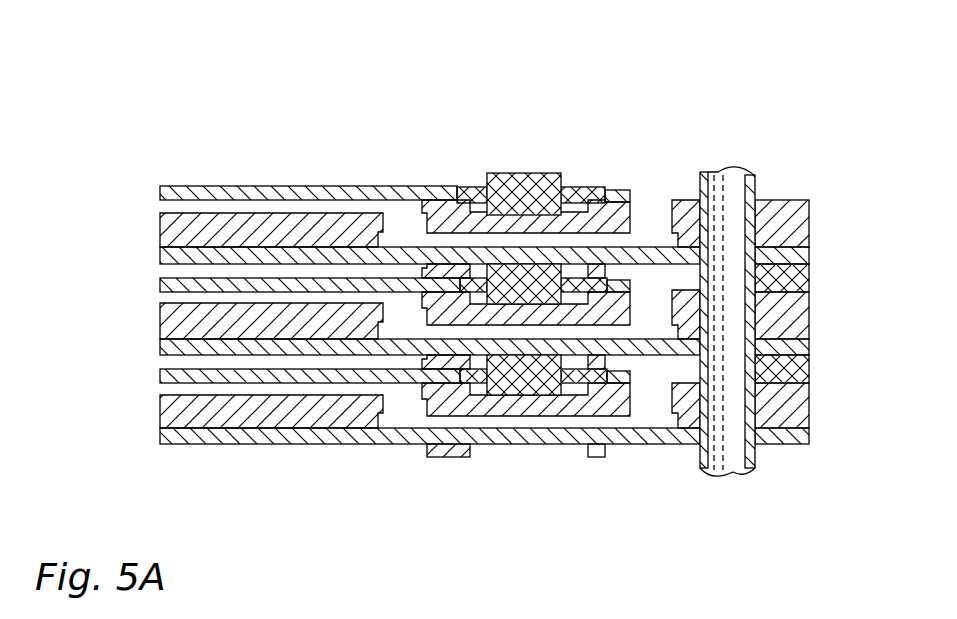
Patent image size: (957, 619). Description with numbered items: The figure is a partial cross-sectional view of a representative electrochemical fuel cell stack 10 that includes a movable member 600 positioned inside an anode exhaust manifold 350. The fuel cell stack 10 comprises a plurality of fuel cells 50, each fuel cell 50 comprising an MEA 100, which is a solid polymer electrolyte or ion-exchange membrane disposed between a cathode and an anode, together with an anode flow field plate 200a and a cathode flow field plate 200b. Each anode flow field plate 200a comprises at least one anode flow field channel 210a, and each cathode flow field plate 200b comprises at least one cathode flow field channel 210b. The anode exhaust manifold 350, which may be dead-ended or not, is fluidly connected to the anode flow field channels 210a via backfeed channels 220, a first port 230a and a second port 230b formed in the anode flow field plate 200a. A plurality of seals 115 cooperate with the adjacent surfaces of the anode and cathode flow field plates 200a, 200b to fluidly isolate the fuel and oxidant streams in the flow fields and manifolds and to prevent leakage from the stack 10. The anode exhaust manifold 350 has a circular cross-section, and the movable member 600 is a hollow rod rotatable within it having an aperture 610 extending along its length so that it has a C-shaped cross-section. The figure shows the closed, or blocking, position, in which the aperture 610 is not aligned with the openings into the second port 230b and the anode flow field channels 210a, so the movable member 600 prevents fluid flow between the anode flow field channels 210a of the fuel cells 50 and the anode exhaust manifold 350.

The electrochemical fuel cell stack 10 is at (818, 50).
The fuel cell 50 is at (815, 250).
The MEA 100 is at (160, 283).
The seal 115 is at (527, 172).
The anode flow field plate 200a is at (391, 197).
The cathode flow field plate 200b is at (394, 400).
The anode flow field channel 210a is at (247, 205).
The cathode flow field channel 210b is at (243, 357).
The backfeed channel 220 is at (442, 242).
The first port 230a is at (404, 222).
The second port 230b is at (645, 220).
The anode exhaust manifold 350 is at (725, 480).
The movable member 600 is at (758, 327).
The aperture 610 is at (718, 173).